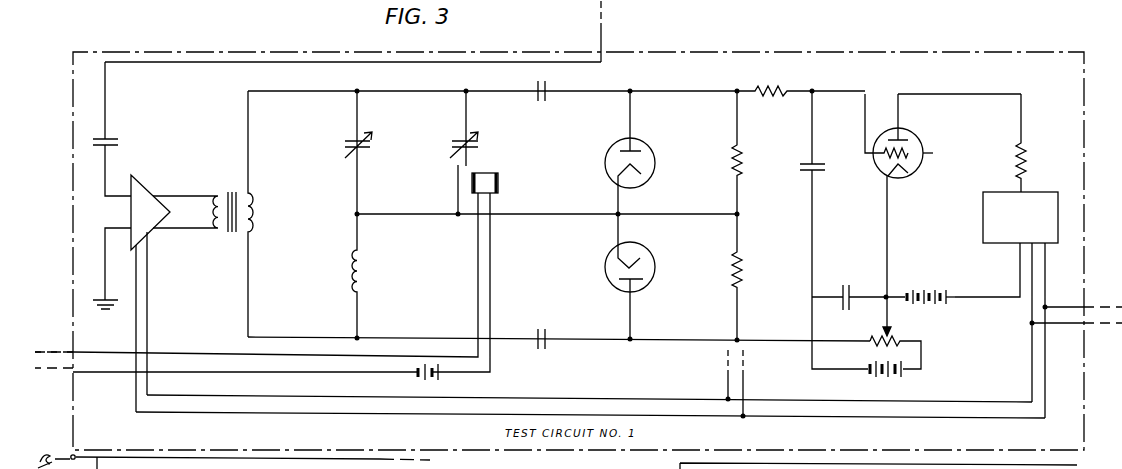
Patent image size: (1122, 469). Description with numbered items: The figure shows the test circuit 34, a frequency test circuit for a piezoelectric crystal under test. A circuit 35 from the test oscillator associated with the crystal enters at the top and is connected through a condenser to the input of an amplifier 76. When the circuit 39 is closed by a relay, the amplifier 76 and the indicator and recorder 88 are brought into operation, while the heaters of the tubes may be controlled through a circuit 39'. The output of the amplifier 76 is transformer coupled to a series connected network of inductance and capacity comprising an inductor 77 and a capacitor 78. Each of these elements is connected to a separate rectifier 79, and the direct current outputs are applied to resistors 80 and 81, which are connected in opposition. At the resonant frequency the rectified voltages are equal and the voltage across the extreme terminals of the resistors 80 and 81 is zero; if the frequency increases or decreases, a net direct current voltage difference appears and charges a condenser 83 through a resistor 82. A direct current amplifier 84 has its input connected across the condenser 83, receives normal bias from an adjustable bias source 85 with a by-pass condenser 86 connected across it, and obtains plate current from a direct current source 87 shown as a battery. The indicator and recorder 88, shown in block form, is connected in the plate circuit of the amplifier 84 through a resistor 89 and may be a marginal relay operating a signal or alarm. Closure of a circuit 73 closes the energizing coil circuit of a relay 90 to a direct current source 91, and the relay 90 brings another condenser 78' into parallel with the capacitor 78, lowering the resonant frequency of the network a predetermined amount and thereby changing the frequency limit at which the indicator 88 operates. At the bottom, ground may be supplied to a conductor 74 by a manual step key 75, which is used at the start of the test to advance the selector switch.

The test circuit No. 1 34 is at (773, 56).
The circuit 35 is at (603, 44).
The circuit 39 is at (1077, 327).
The circuit 39' is at (752, 383).
The circuit 73 is at (94, 371).
The conductor 74 is at (256, 457).
The manual step key 75 is at (53, 454).
The amplifier 76 is at (142, 196).
The inductor 77 is at (368, 277).
The capacitor 78 is at (373, 152).
The condenser 78' is at (478, 152).
The rectifier 79 is at (655, 165).
The resistor 80 is at (746, 270).
The resistor 81 is at (745, 156).
The resistor 82 is at (778, 88).
The condenser 83 is at (823, 171).
The direct current amplifier 84 is at (909, 195).
The adjustable bias source 85 is at (908, 351).
The by-pass condenser 86 is at (856, 275).
The direct current source 87 is at (944, 287).
The indicator and recorder 88 is at (983, 213).
The resistor 89 is at (1027, 162).
The relay 90 is at (498, 185).
The direct current source 91 is at (432, 378).